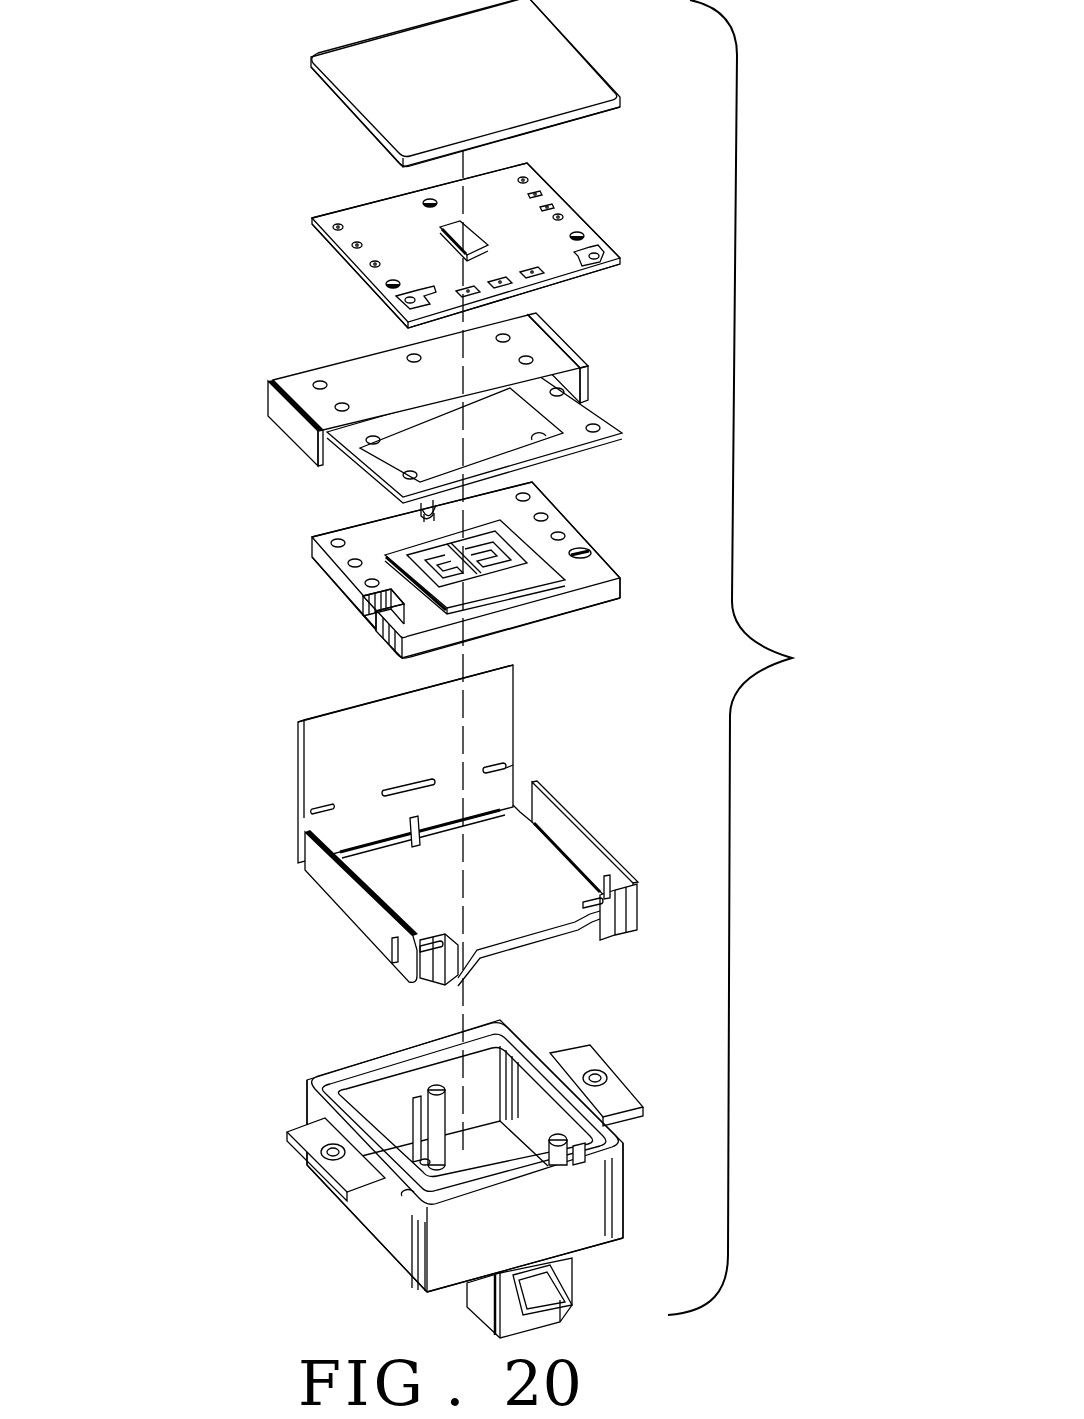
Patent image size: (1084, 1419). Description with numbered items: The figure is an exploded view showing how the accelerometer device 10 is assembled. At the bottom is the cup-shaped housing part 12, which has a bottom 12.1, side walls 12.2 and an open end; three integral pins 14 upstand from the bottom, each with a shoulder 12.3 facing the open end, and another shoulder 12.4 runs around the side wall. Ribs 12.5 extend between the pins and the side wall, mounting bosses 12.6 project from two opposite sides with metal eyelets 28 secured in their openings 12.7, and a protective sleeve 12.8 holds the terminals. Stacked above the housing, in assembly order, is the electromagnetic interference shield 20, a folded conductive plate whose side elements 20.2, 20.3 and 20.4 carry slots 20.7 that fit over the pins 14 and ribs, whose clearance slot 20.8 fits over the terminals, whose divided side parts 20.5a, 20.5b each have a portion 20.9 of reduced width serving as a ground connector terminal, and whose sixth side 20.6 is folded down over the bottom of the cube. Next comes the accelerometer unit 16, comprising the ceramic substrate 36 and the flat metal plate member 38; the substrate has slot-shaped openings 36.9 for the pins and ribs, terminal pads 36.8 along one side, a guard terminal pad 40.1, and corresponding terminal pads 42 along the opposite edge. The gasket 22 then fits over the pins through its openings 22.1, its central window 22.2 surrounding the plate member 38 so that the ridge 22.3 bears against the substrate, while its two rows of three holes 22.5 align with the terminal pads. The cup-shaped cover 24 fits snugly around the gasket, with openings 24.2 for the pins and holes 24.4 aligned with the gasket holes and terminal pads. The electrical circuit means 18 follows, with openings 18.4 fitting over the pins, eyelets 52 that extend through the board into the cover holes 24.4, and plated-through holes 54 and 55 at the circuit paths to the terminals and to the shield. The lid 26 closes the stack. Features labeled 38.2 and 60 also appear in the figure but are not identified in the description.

The accelerometer device 10 is at (791, 648).
The housing part 12 is at (499, 1132).
The bottom 12.1 is at (478, 1135).
The side walls 12.2 is at (365, 1220).
The shoulder 12.3 is at (424, 1158).
The shoulder 12.4 is at (456, 1050).
The ribs 12.5 is at (420, 1100).
The mounting bosses 12.6 is at (615, 1100).
The openings 12.7 is at (612, 1078).
The protective sleeve 12.8 is at (480, 1302).
The integral pins 14 is at (436, 1090).
The accelerometer unit 16 is at (455, 557).
The electrical circuit means 18 is at (475, 226).
The openings 18.4 is at (424, 200).
The electromagnetic interference shield 20 is at (491, 832).
The side element 20.2 is at (352, 900).
The side element 20.3 is at (504, 776).
The side element 20.4 is at (545, 806).
The side element part 20.5a is at (445, 975).
The side element part 20.5b is at (617, 918).
The sixth side 20.6 is at (508, 705).
The slots 20.7 is at (420, 838).
The clearance slot 20.8 is at (535, 938).
The portion of reduced width 20.9 is at (606, 905).
The gasket 22 is at (471, 434).
The openings 22.1 is at (600, 428).
The central window 22.2 is at (602, 444).
The ridge 22.3 is at (422, 514).
The holes 22.5 is at (562, 390).
The cover 24 is at (424, 384).
The openings 24.2 is at (408, 356).
The holes 24.4 is at (510, 337).
The lid 26 is at (608, 52).
The metal eyelets 28 is at (598, 1070).
The substrate 36 is at (540, 480).
The terminal pads 36.8 is at (331, 543).
The openings 36.9 is at (428, 512).
The flat metal plate member 38 is at (529, 583).
The serpentine slot 38.2 is at (478, 570).
The terminal pad 40.1 is at (348, 564).
The terminal pads 42 is at (530, 497).
The eyelets or hollow rivets 52 is at (527, 178).
The plated-through holes 54 is at (476, 290).
The plated-through holes 55 is at (600, 252).
The alignment hole 60 is at (550, 205).